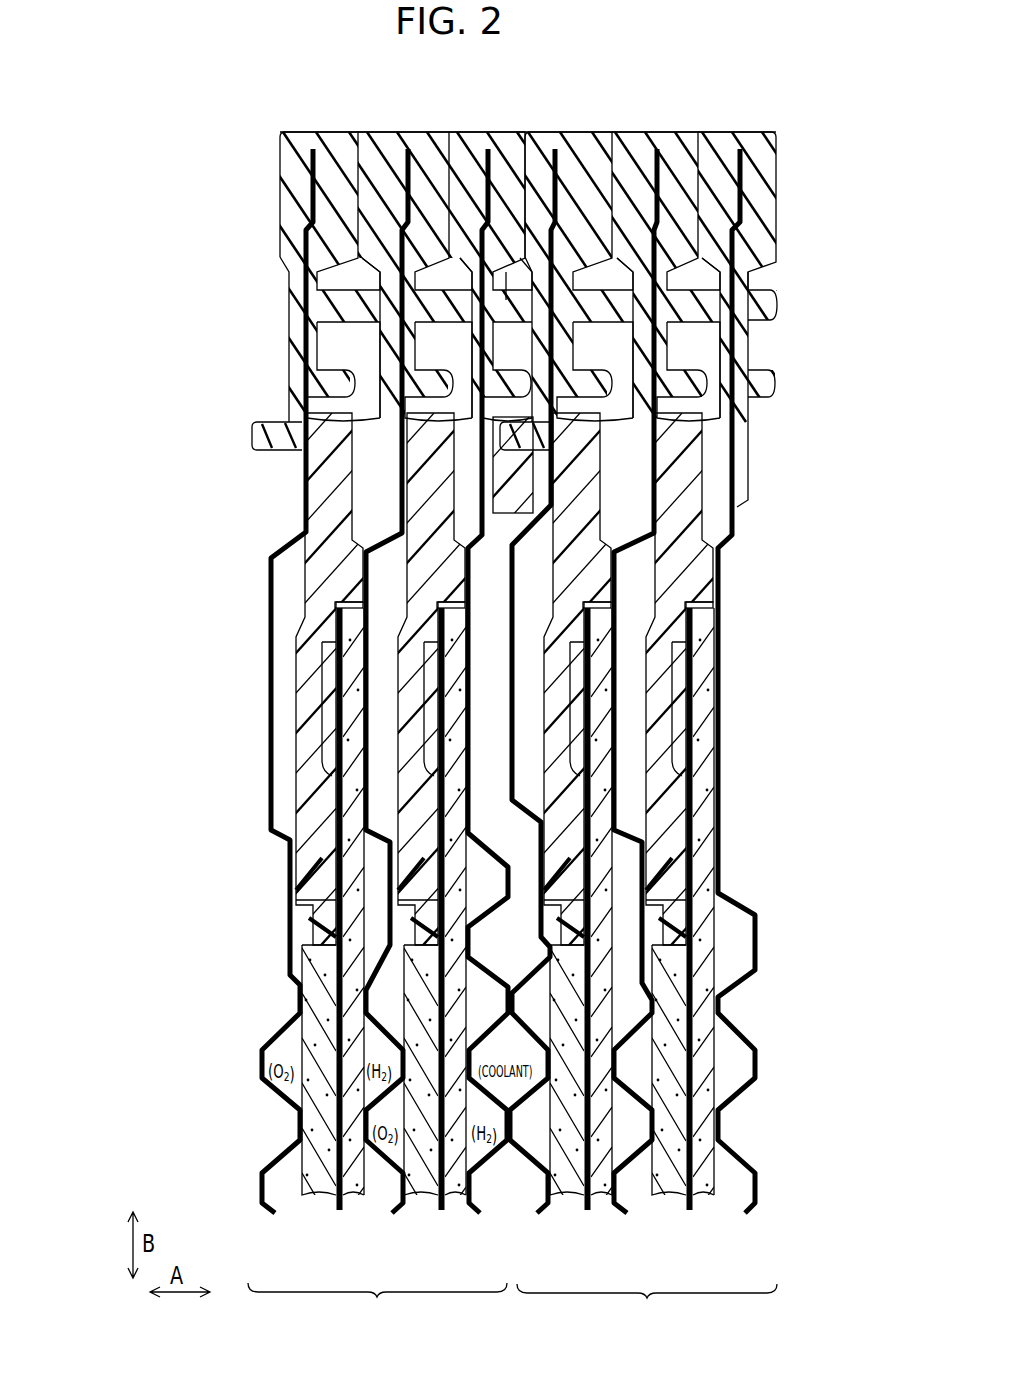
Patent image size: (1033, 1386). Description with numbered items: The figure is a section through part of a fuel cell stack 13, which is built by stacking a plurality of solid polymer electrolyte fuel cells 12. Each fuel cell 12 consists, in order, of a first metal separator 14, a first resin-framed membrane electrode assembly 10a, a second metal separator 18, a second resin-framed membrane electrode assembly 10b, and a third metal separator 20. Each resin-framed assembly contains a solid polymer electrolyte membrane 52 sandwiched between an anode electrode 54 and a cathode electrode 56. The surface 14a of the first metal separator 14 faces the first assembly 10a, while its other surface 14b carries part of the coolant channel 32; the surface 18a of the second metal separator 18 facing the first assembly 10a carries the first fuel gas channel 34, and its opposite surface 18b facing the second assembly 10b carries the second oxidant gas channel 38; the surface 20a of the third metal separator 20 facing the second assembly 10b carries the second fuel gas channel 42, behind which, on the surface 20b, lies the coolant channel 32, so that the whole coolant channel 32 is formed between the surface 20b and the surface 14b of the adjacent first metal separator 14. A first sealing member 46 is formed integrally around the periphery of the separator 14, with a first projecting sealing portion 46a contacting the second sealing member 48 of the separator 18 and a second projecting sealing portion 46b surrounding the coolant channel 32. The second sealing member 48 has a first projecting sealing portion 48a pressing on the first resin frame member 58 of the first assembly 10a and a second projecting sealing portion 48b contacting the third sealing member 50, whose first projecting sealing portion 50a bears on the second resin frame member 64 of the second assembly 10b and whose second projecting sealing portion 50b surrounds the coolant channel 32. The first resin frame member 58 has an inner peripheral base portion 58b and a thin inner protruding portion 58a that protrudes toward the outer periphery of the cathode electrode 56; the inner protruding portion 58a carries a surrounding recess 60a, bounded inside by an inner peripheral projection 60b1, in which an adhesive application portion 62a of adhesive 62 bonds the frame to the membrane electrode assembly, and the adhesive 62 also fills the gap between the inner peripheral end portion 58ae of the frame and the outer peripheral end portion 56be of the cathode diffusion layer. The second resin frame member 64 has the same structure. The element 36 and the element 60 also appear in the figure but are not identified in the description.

The fuel cell stack 13 is at (529, 66).
The solid polymer electrolyte fuel cell 12 is at (512, 1306).
The first resin-framed membrane electrode assembly 10a is at (588, 1222).
The second resin-framed membrane electrode assembly 10b is at (710, 1258).
The first metal separator 14 is at (262, 1258).
The surface of the first metal separator 14a is at (275, 672).
The surface of the first metal separator 14b is at (268, 672).
The second metal separator 18 is at (638, 1205).
The surface of the second metal separator 18a is at (395, 611).
The surface of the second metal separator 18b is at (394, 540).
The third metal separator 20 is at (487, 1205).
The surface of the third metal separator 20a is at (500, 887).
The surface of the third metal separator 20b is at (488, 878).
The coolant channel 32 is at (535, 1052).
The first fuel gas channel 34 is at (355, 1085).
The coolant flow field 36 is at (300, 1045).
The second oxidant gas channel 38 is at (485, 1158).
The second fuel gas channel 42 is at (485, 1150).
The first sealing member 46 is at (296, 122).
The first projecting sealing portion 46a is at (350, 323).
The second projecting sealing portion 46b is at (280, 425).
The second sealing member 48 is at (400, 122).
The first projecting sealing portion 48a is at (375, 445).
The second projecting sealing portion 48b is at (572, 323).
The third sealing member 50 is at (488, 122).
The first projecting sealing portion 50a is at (458, 453).
The second projecting sealing portion 50b is at (506, 300).
The solid polymer electrolyte membrane 52 is at (340, 1210).
The anode electrode 54 is at (278, 1244).
The cathode electrode 56 is at (315, 1198).
The outer peripheral end portion of the cathode diffusion layer 56be is at (310, 942).
The first resin frame member 58 is at (294, 594).
The inner protruding portion 58a is at (320, 767).
The inner peripheral end portion of the first resin frame member 58ae is at (300, 905).
The inner peripheral base portion 58b is at (300, 628).
The resin frame member 60 is at (487, 693).
The surrounding recess 60a is at (322, 700).
The inner peripheral projection 60b1 is at (330, 858).
The adhesive 62 is at (309, 874).
The adhesive application portion 62a is at (203, 937).
The second resin frame member 64 is at (270, 557).